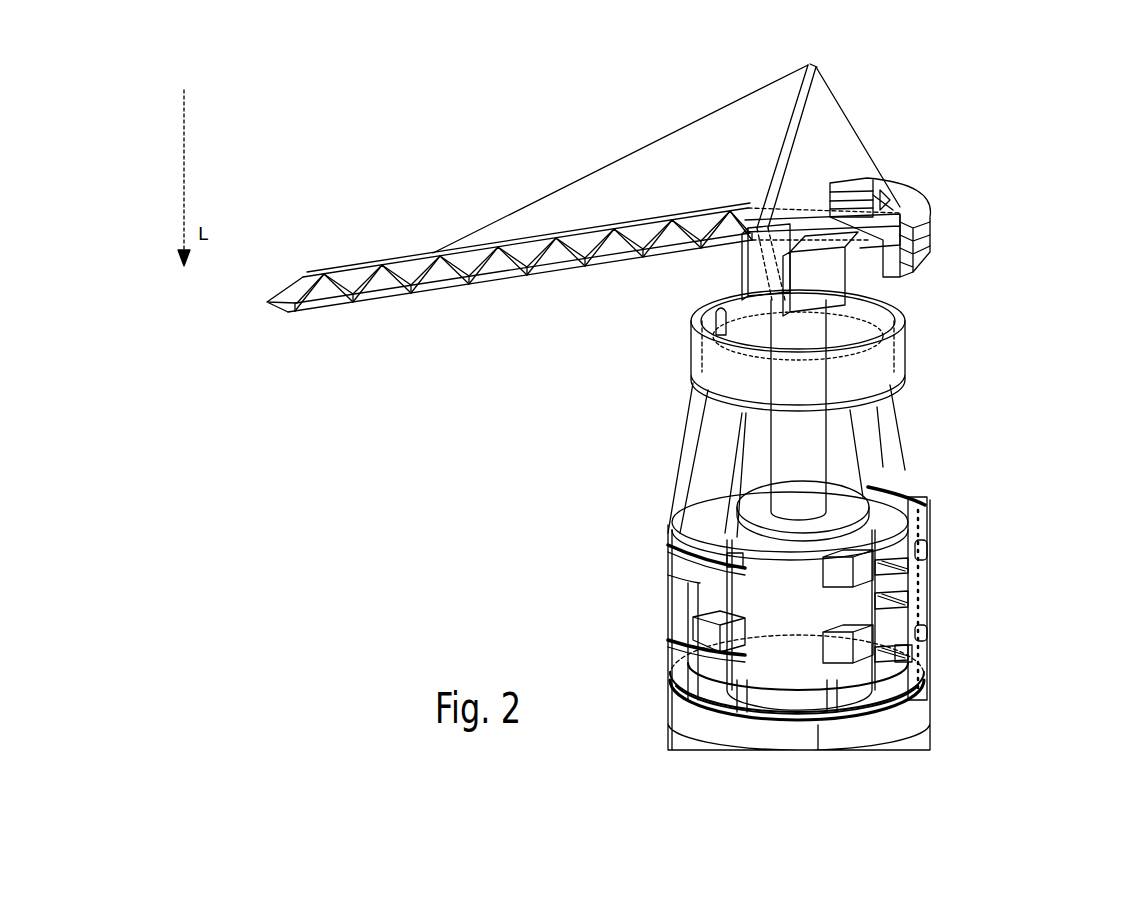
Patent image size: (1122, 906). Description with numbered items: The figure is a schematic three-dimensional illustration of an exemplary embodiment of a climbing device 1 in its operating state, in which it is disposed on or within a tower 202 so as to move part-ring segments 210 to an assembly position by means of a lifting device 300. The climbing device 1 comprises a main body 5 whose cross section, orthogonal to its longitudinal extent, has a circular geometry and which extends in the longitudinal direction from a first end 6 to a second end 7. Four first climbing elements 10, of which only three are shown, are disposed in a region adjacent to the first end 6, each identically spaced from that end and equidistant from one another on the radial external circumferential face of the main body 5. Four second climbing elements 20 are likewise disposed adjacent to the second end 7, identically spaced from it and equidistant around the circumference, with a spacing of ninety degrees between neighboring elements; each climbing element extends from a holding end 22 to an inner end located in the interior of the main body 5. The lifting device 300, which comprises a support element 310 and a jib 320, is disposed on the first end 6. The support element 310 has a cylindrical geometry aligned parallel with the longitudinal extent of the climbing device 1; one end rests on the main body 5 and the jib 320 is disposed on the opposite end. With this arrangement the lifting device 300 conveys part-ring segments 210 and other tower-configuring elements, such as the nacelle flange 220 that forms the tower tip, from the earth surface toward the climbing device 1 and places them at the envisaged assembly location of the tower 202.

The climbing device 1 is at (702, 600).
The main body 5 is at (780, 570).
The first end 6 is at (848, 508).
The second end 7 is at (860, 715).
The first climbing element 10 is at (738, 560).
The second climbing element 20 is at (880, 608).
The holding end 22 is at (900, 655).
The tower 202 is at (1040, 152).
The part-ring segment 210 is at (922, 520).
The nacelle flange 220 is at (705, 360).
The lifting device 300 is at (666, 182).
The support element 310 is at (813, 457).
The jib 320 is at (880, 205).